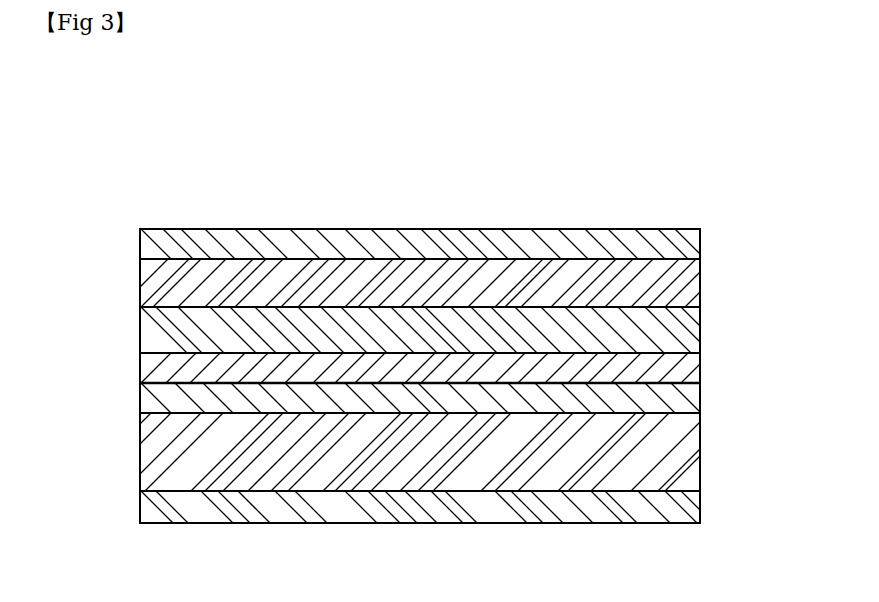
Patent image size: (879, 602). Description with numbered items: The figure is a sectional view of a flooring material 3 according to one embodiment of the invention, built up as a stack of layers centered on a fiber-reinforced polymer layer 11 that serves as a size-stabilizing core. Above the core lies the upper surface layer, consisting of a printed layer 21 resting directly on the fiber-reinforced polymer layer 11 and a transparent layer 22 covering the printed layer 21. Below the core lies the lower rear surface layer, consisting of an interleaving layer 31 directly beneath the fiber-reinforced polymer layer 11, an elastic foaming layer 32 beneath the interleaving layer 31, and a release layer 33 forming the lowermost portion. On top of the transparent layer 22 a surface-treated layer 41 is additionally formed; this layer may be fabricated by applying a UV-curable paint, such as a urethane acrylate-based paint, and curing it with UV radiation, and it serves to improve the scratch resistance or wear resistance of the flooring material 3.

The flooring material 3 is at (475, 305).
The fiber-reinforced polymer layer 11 is at (700, 363).
The printed layer 21 is at (700, 322).
The transparent layer 22 is at (700, 273).
The interleaving layer 31 is at (700, 396).
The elastic foaming layer 32 is at (700, 448).
The release layer 33 is at (700, 503).
The surface-treated layer 41 is at (700, 237).